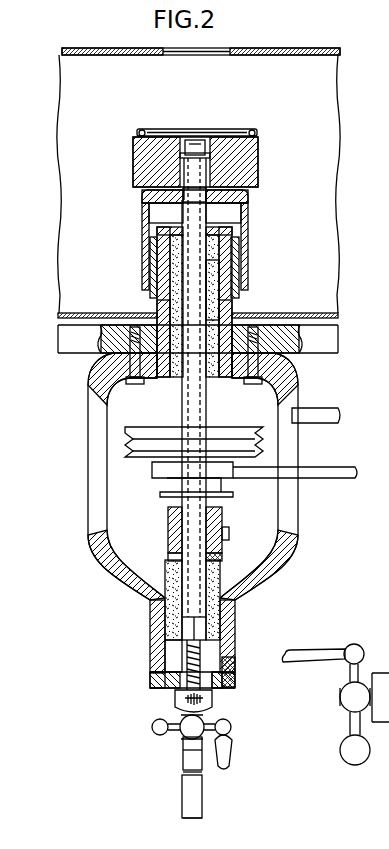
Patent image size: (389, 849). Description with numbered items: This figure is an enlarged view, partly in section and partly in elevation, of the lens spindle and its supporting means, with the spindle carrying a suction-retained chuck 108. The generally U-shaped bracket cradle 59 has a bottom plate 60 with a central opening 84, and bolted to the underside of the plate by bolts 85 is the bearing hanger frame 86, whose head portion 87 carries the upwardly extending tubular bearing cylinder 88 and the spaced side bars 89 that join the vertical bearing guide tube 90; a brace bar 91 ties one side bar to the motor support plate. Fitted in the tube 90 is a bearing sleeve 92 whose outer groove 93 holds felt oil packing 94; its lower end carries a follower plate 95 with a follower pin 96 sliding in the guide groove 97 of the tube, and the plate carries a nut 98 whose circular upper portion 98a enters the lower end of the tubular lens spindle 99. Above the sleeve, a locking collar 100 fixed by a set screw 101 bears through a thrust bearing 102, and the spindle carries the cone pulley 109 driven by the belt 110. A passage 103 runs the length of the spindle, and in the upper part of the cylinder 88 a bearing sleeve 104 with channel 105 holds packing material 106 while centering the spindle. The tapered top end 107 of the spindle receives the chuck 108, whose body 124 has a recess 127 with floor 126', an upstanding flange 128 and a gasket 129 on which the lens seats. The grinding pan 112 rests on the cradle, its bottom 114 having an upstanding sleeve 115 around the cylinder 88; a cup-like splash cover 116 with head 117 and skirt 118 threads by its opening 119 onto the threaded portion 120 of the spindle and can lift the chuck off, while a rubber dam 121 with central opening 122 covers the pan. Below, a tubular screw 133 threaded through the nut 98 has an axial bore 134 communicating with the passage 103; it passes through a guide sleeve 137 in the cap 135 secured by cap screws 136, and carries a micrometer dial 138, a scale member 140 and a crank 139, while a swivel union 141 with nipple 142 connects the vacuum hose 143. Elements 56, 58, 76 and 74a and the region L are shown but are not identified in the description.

The dam 121 is at (304, 50).
The opening 122 is at (178, 48).
The grinding pan 112 is at (323, 168).
The chuck 108 is at (269, 158).
The body 124 is at (150, 150).
The gasket 129 is at (150, 131).
The upstanding flange 128 is at (140, 130).
The recess 127 is at (235, 130).
The bottom of recess 126' is at (223, 117).
The tapered end 107 is at (185, 175).
The head portion 117 is at (256, 201).
The threaded portion 120 is at (188, 198).
The threaded opening 119 is at (178, 210).
The splash cover 116 is at (140, 246).
The skirt 118 is at (150, 279).
The tubular bearing cylinder 88 is at (232, 263).
The central opening 84 is at (238, 328).
The upstanding circular sleeve 115 is at (160, 301).
The channel 105 is at (220, 249).
The packing material 106 is at (172, 262).
The bearing sleeve 104 is at (255, 290).
The bottom 114 is at (70, 313).
The bracket cradle 59 is at (51, 352).
The support 58 is at (383, 337).
The frame 56 is at (388, 384).
The bottom plate 60 is at (82, 360).
The bolts 85 is at (136, 385).
The head portion 87 is at (246, 385).
The lubricant chamber L is at (82, 462).
The bearing hanger frame 86 is at (86, 526).
The side bars 89 is at (300, 547).
The brace bar 91 is at (329, 410).
The lens spindle 99 is at (204, 522).
The cone pulley 109 is at (140, 461).
The drive belt 110 is at (340, 470).
The locking collar 100 is at (170, 520).
The set screw 101 is at (229, 535).
The passage 103 is at (178, 560).
The axial bore 134 is at (224, 557).
The bearing guide tube 90 is at (158, 626).
The thrust bearing 102 is at (172, 596).
The felt oil packing 94 is at (167, 604).
The bearing sleeve 92 is at (232, 603).
The follower pin 96 is at (167, 642).
The groove 93 is at (206, 636).
The follower plate 95 is at (234, 659).
The guide groove 97 is at (172, 685).
The circular upper portion 98a is at (168, 674).
The nut 98 is at (226, 680).
The cap 135 is at (176, 686).
The cap screws 136 is at (275, 700).
The guide sleeve 137 is at (212, 690).
The screw 133 is at (180, 710).
The micrometer dial 138 is at (178, 731).
The micrometer scale varying member 140 is at (179, 766).
The crank 139 is at (251, 752).
The swivel pipe coupling 141 is at (169, 796).
The coupling nipple 142 is at (200, 775).
The vacuum hose 143 is at (200, 803).
The valve handle 76 is at (355, 646).
The valve 74a is at (318, 660).